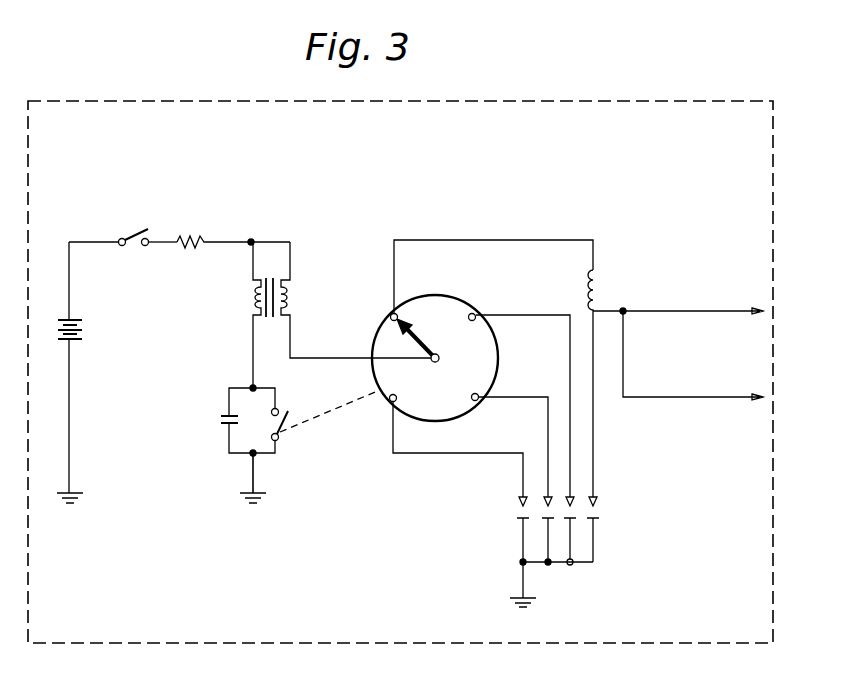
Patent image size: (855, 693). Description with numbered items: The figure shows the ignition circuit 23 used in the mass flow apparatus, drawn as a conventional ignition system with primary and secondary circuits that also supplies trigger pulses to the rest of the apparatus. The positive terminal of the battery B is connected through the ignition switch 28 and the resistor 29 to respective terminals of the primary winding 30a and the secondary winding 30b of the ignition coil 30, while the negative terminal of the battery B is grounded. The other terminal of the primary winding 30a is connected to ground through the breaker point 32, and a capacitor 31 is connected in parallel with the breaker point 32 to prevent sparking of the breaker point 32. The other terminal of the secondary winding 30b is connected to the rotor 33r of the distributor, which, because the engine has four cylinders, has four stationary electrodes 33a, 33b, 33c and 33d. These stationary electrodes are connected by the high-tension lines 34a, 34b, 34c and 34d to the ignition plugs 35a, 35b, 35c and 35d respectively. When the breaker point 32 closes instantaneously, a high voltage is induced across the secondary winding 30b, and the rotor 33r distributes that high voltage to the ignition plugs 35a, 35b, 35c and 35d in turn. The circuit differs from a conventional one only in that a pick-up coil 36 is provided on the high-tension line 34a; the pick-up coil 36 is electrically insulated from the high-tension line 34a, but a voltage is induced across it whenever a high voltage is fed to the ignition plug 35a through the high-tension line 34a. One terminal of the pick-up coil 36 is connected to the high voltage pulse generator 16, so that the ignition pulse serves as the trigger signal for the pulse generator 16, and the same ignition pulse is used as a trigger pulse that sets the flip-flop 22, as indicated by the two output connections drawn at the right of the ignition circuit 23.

The ignition circuit 23 is at (400, 372).
The battery B is at (83, 330).
The ignition switch 28 is at (131, 232).
The resistor 29 is at (190, 236).
The ignition coil 30 is at (308, 292).
The primary winding 30a is at (252, 297).
The secondary winding 30b is at (273, 269).
The capacitor 31 is at (221, 418).
The breaker point 32 is at (292, 432).
The stationary electrode 33a is at (397, 312).
The stationary electrode 33b is at (473, 312).
The stationary electrode 33c is at (478, 393).
The stationary electrode 33d is at (396, 402).
The rotor 33r is at (427, 341).
The high-tension line 34a is at (495, 240).
The high-tension line 34b is at (508, 315).
The high-tension line 34c is at (507, 398).
The high-tension line 34d is at (445, 454).
The ignition plug 35a is at (597, 509).
The ignition plug 35b is at (576, 510).
The ignition plug 35c is at (553, 510).
The ignition plug 35d is at (516, 511).
The pick-up coil 36 is at (588, 280).
The high voltage pulse generator 16 is at (678, 352).
The flip-flop 22 is at (697, 383).